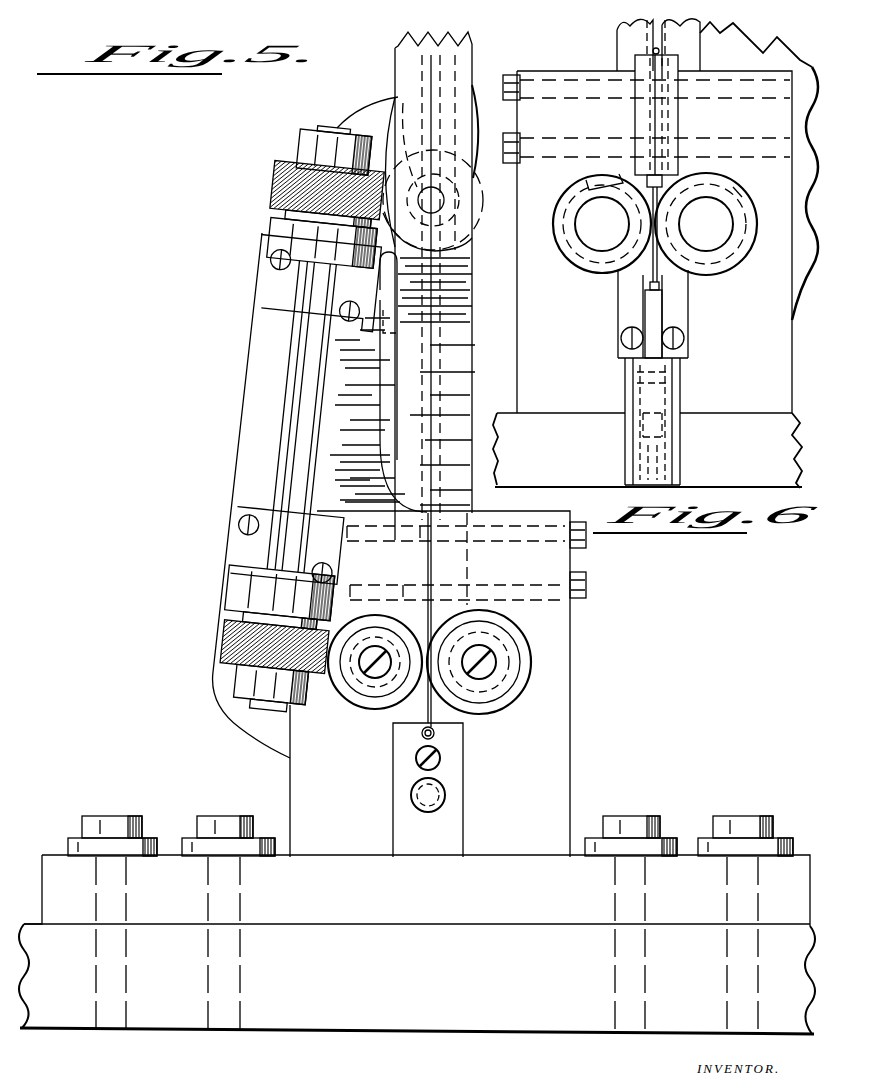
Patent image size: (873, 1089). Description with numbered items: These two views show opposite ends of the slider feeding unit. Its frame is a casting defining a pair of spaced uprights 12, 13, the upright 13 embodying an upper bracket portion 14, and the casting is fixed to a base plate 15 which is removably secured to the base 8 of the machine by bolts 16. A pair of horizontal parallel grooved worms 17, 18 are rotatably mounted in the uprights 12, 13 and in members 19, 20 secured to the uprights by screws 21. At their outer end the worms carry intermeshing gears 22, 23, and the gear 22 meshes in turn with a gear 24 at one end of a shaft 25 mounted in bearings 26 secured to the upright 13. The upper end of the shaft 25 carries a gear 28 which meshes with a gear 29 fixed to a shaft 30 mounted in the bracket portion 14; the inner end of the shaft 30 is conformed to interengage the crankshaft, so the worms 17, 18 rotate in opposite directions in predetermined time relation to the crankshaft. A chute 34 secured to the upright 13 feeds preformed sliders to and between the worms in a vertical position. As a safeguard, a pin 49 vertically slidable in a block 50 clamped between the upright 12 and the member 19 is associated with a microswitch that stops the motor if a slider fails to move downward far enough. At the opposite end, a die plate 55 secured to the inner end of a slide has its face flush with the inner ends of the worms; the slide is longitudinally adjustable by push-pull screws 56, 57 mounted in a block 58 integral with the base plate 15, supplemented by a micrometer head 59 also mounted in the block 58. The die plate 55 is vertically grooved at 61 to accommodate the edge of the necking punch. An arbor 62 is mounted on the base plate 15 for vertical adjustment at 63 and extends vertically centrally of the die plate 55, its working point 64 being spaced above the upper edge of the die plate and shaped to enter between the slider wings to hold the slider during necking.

In FIG. 5, the base 8 is at (343, 1017).
In FIG. 6, the upright 12 is at (781, 398).
In FIG. 5, the upright 13 is at (252, 462).
In FIG. 5, the upper bracket portion 14 is at (478, 85).
In FIG. 5, the base plate 15 is at (297, 920).
In FIG. 6, the base plate 15 is at (560, 477).
In FIG. 5, the bolts 16 is at (217, 817).
In FIG. 6, the worm 17 is at (745, 260).
In FIG. 6, the worm 18 is at (585, 268).
In FIG. 6, the member 19 is at (517, 273).
In FIG. 5, the member 20 is at (556, 728).
In FIG. 5, the screws 21 is at (588, 583).
In FIG. 6, the screws 21 is at (513, 137).
In FIG. 5, the gear 22 is at (352, 700).
In FIG. 5, the gear 23 is at (534, 667).
In FIG. 5, the gear 24 is at (226, 642).
In FIG. 5, the shaft 25 is at (292, 406).
In FIG. 5, the bearings 26 is at (270, 230).
In FIG. 5, the gear 28 is at (274, 180).
In FIG. 5, the gear 29 is at (384, 176).
In FIG. 5, the shaft 30 is at (394, 88).
In FIG. 6, the chute 34 is at (617, 30).
In FIG. 6, the pin 49 is at (652, 51).
In FIG. 6, the block 50 is at (672, 55).
In FIG. 6, the die plate 55 is at (630, 317).
In FIG. 5, the push-pull screw 56 is at (436, 737).
In FIG. 5, the push-pull screw 57 is at (442, 762).
In FIG. 5, the block 58 is at (403, 777).
In FIG. 5, the micrometer head 59 is at (447, 797).
In FIG. 6, the vertical groove 61 is at (682, 285).
In FIG. 6, the arbor 62 is at (663, 327).
In FIG. 6, the vertical adjustment 63 is at (690, 445).
In FIG. 6, the working point 64 is at (652, 283).